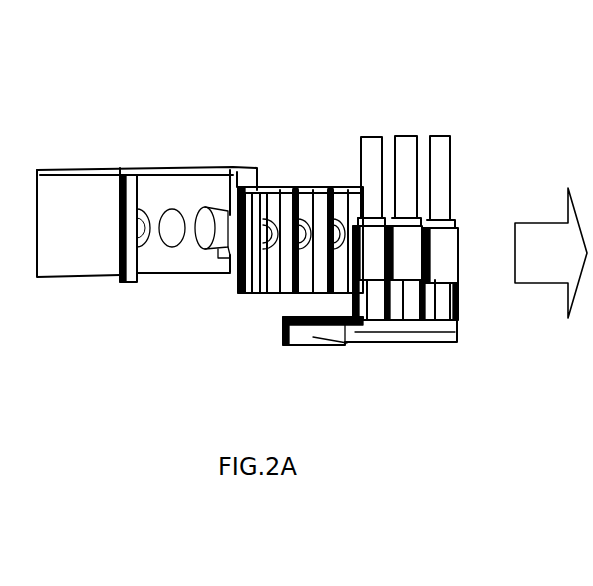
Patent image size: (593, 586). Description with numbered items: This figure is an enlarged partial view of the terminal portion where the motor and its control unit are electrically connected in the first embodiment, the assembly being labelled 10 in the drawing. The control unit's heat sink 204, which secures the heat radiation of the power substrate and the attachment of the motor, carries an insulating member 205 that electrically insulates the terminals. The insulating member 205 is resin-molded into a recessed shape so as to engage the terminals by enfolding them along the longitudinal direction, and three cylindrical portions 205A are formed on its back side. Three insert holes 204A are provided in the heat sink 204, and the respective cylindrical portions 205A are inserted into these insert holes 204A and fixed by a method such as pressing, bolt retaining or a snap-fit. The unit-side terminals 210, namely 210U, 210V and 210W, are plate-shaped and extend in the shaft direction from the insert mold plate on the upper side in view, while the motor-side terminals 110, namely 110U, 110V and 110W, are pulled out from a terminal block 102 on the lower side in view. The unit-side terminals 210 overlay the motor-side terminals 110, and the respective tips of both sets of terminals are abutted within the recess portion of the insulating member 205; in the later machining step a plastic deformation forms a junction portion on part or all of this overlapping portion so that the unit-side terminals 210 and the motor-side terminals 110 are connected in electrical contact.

The rotary electric machine 10 is at (554, 302).
The terminal block 102 is at (297, 348).
The motor-side terminals 110 is at (428, 347).
The motor-side terminal 110U is at (374, 303).
The motor-side terminal 110V is at (408, 303).
The motor-side terminal 110W is at (458, 303).
The heat sink 204 is at (147, 219).
The insert holes 204A is at (177, 207).
The insulating member 205 is at (303, 187).
The cylindrical portions 205A is at (216, 258).
The unit-side terminals 210 is at (449, 152).
The unit-side terminal 210U is at (365, 137).
The unit-side terminal 210V is at (405, 136).
The unit-side terminal 210W is at (440, 136).